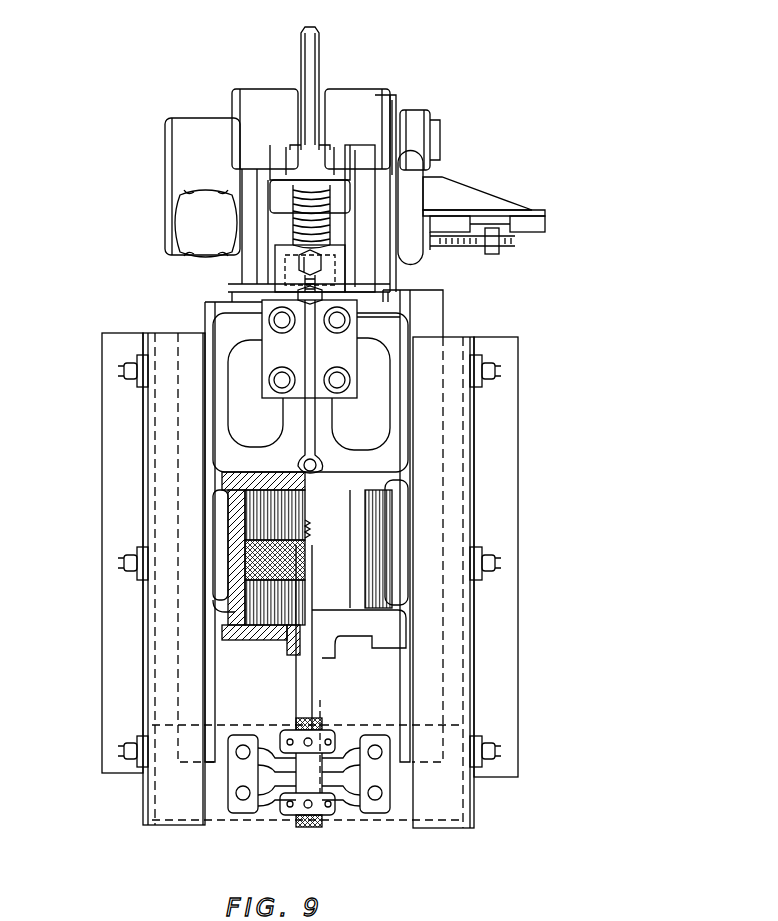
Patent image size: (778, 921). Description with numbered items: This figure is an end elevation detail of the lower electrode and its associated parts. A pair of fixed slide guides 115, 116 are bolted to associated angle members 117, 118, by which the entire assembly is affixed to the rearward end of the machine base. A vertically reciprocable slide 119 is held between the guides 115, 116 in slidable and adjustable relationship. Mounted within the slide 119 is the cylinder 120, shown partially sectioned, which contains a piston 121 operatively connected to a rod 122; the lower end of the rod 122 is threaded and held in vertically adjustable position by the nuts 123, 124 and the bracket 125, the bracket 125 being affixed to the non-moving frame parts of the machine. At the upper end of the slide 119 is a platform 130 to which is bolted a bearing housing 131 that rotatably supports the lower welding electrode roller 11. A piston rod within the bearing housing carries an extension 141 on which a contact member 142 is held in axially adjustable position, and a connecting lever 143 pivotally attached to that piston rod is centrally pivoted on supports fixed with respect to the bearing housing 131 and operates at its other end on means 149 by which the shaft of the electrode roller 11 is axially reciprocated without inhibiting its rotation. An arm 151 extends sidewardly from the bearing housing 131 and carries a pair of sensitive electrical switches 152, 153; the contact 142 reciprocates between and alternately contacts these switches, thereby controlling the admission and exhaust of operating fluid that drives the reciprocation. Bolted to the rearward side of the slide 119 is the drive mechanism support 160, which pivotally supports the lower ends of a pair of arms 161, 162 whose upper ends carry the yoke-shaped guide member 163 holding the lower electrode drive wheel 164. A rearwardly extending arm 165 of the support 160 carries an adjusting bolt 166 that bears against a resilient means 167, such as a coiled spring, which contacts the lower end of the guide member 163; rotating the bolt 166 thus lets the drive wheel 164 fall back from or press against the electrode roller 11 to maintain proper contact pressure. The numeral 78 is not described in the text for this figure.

The lower welding electrode roller 11 is at (313, 48).
The cam member 78 is at (185, 162).
The fixed slide guide 115 is at (455, 345).
The fixed slide guide 116 is at (170, 338).
The angle member 117 is at (503, 475).
The angle member 118 is at (122, 428).
The vertically reciprocable slide 119 is at (330, 458).
The cylinder 120 is at (375, 543).
The piston 121 is at (276, 530).
The rod 122 is at (305, 668).
The nut 123 is at (322, 738).
The nut 124 is at (325, 812).
The bracket 125 is at (340, 763).
The platform 130 is at (395, 304).
The bearing housing 131 is at (372, 262).
The extension 141 is at (460, 242).
The contact member 142 is at (494, 248).
The connecting lever 143 is at (415, 180).
The means for axially reciprocating the shaft 149 is at (410, 118).
The arm 151 is at (475, 198).
The sensitive electrical switch 152 is at (530, 224).
The sensitive electrical switch 153 is at (443, 222).
The drive mechanism support 160 is at (348, 343).
The arm 161 is at (356, 240).
The arm 162 is at (260, 247).
The yoke-shaped guide member 163 is at (345, 147).
The lower electrode drive wheel 164 is at (325, 132).
The rearwardly extending arm 165 is at (312, 323).
The adjusting bolt 166 is at (312, 305).
The resilient means 167 is at (300, 200).